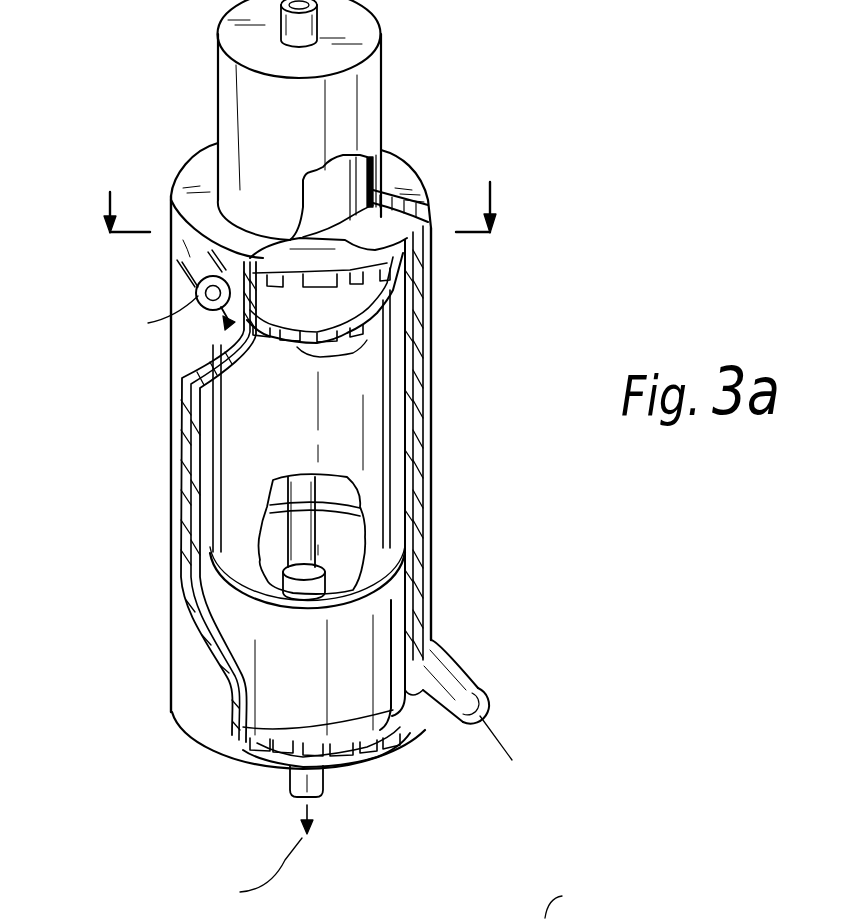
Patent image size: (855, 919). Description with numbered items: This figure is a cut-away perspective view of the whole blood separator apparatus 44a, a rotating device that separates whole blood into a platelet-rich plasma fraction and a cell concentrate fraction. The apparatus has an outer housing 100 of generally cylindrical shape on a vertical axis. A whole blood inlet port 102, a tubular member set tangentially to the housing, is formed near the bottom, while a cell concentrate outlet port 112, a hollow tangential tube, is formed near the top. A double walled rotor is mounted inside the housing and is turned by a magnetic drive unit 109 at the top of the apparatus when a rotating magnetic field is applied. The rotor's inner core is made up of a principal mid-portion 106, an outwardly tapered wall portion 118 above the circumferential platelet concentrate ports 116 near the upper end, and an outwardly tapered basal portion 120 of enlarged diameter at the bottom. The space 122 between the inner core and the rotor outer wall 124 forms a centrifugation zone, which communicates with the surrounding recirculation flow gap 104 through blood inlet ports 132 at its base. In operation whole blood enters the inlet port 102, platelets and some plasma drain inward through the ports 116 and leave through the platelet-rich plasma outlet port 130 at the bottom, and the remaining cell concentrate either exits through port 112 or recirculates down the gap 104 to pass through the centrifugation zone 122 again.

The whole blood separator apparatus 44a is at (470, 137).
The outer housing 100 is at (183, 353).
The whole blood inlet port 102 is at (465, 675).
The recirculation flow gap 104 is at (400, 523).
The principal mid-portion 106 is at (345, 413).
The magnetic drive unit 109 is at (355, 112).
The cell concentrate outlet port 112 is at (186, 248).
The platelet concentrate ports 116 is at (320, 346).
The outwardly tapered wall portion 118 is at (343, 294).
The outwardly tapered basal portion 120 is at (380, 628).
The centrifugation zone 122 is at (212, 480).
The rotor outer wall 124 is at (431, 442).
The platelet-rich plasma outlet port 130 is at (325, 790).
The blood inlet ports 132 is at (338, 282).